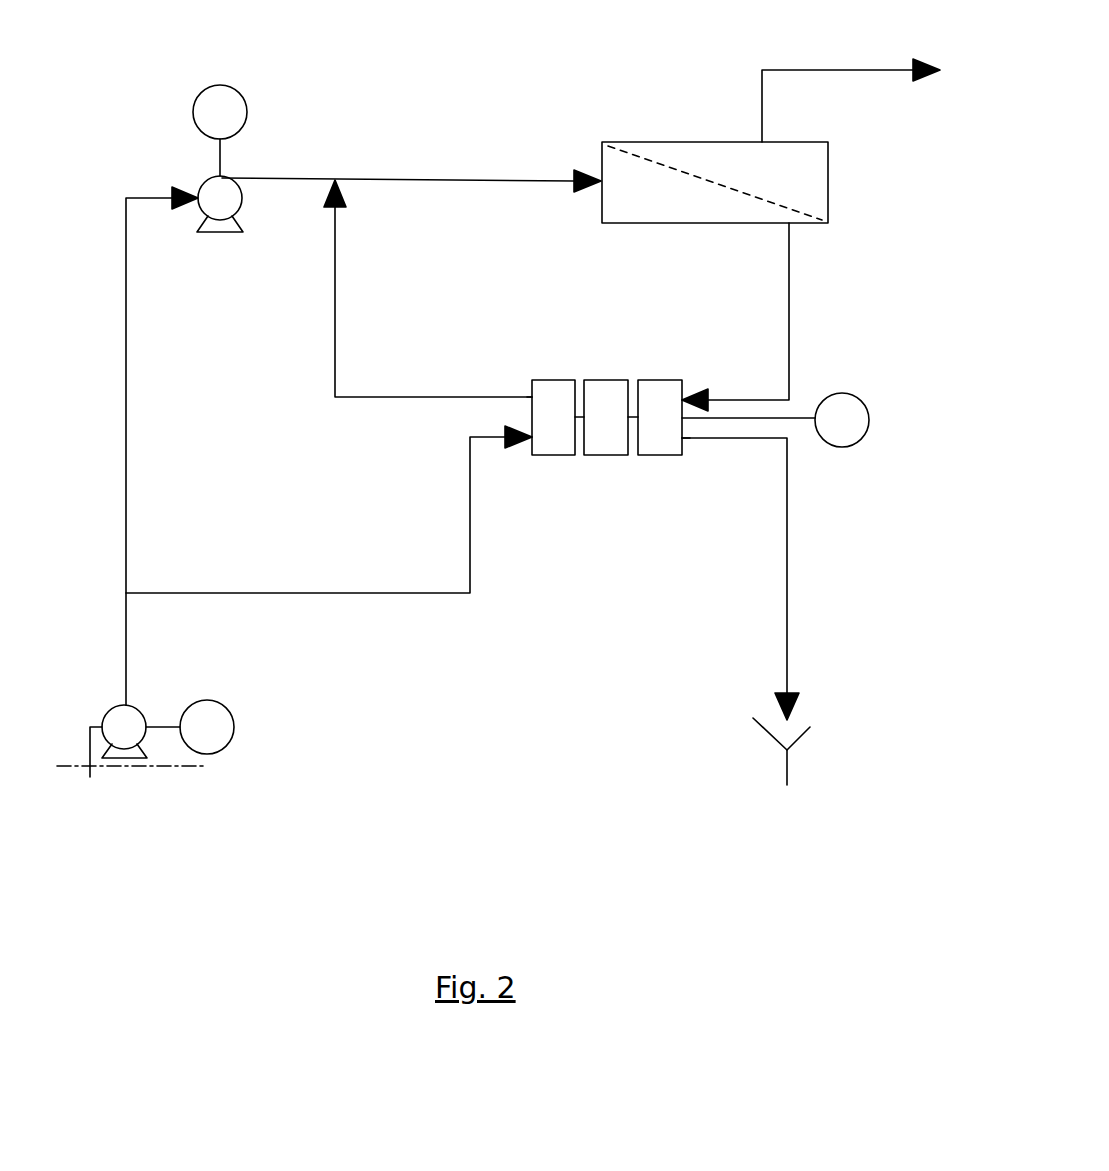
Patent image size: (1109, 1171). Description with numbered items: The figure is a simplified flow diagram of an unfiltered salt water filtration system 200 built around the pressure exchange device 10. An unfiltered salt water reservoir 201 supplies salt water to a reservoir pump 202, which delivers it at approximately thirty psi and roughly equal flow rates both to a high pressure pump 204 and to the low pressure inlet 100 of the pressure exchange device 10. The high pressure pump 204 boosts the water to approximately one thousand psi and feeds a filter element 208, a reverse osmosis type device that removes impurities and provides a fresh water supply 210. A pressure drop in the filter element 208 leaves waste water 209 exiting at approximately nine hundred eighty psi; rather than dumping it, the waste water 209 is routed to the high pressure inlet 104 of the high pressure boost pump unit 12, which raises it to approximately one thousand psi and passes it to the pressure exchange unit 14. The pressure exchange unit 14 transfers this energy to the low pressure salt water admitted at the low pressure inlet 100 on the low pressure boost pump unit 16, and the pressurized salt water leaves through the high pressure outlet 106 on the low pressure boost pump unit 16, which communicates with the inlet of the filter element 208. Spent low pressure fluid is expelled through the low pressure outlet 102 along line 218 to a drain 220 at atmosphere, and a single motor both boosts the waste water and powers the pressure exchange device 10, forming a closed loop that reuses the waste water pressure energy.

The pressure exchange device 10 is at (588, 460).
The high pressure boost pump unit 12 is at (662, 375).
The pressure exchange unit 14 is at (607, 375).
The low pressure boost pump unit 16 is at (553, 375).
The low pressure inlet 100 is at (527, 445).
The low pressure outlet 102 is at (690, 450).
The high pressure inlet 104 is at (690, 387).
The high pressure outlet 106 is at (520, 390).
The unfiltered salt water filtration system 200 is at (495, 439).
The unfiltered salt water reservoir 201 is at (73, 758).
The reservoir pump 202 is at (145, 707).
The high pressure pump 204 is at (233, 177).
The filter element 208 is at (657, 140).
The waste water 209 is at (789, 358).
The fresh water supply 210 is at (792, 68).
The drain line 218 is at (793, 562).
The drain 220 is at (807, 703).